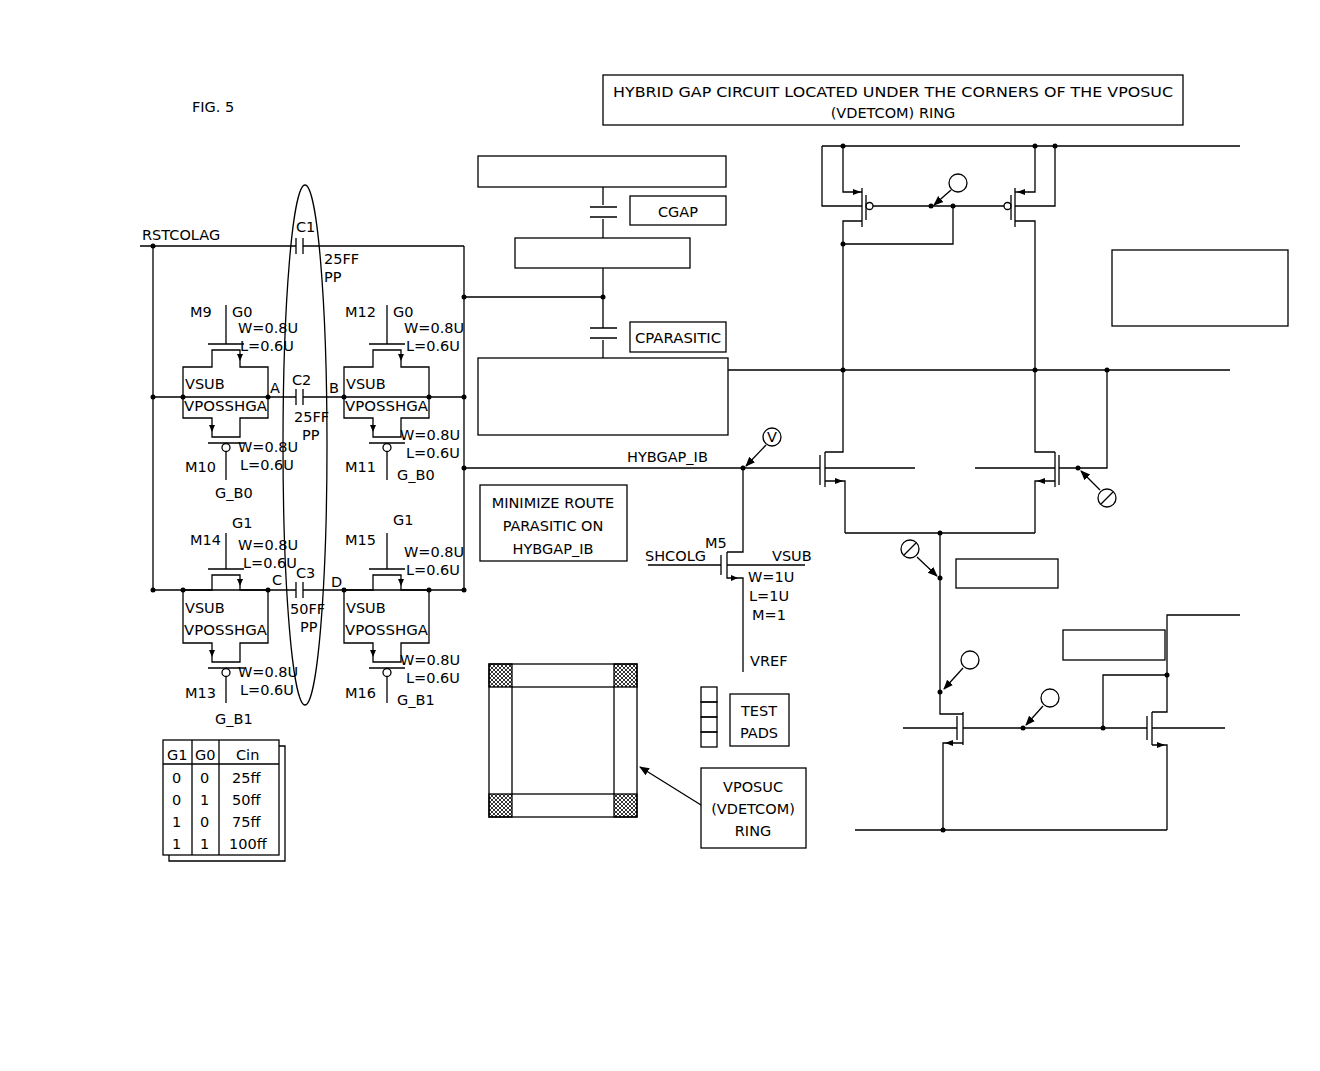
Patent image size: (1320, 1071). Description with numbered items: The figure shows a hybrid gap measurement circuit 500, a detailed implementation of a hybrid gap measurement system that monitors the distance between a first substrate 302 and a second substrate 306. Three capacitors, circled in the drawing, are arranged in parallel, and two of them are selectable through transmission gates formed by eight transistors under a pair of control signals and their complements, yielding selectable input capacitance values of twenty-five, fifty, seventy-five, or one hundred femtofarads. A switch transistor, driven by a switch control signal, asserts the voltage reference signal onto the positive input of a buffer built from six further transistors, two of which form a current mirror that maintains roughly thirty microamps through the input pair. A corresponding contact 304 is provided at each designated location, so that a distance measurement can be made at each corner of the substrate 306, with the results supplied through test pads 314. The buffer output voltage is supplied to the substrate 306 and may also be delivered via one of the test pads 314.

The substrate 302 is at (496, 190).
The contact 304 is at (690, 254).
The substrate 306 is at (728, 390).
The test pads 314 is at (686, 704).
The hybrid gap measurement circuit 500 is at (1206, 836).